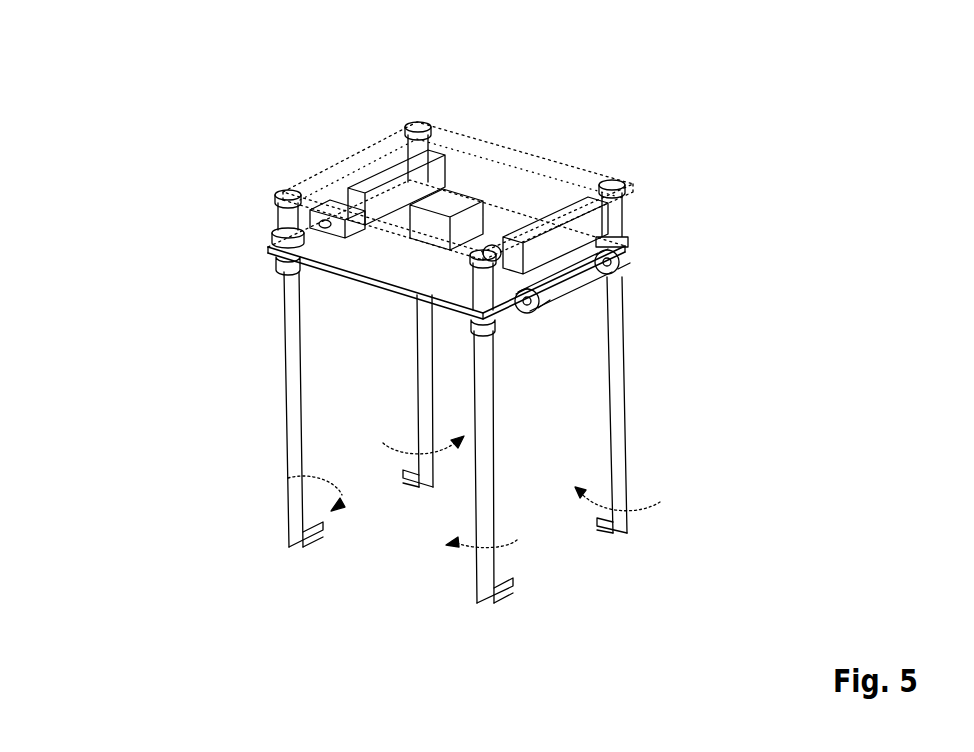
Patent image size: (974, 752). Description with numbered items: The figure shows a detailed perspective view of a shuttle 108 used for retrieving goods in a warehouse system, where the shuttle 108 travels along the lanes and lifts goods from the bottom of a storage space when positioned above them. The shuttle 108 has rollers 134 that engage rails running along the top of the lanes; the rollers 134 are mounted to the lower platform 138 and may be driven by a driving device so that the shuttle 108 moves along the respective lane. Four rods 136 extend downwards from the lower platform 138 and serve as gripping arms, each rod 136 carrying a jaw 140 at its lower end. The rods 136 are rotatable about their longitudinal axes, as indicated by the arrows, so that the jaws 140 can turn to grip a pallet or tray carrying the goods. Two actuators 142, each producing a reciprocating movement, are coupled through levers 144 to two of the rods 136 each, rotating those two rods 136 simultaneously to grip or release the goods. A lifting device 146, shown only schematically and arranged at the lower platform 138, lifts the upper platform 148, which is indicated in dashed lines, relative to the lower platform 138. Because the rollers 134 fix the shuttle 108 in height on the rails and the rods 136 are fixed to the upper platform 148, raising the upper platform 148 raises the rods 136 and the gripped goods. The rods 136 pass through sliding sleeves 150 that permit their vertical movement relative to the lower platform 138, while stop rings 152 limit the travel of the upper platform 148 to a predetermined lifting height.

The shuttle 108 is at (238, 108).
The rollers 134 is at (537, 303).
The rods 136 is at (615, 372).
The lower platform 138 is at (352, 257).
The jaw 140 is at (610, 537).
The actuators 142 is at (397, 200).
The levers 144 is at (288, 232).
The lifting device 146 is at (483, 215).
The upper platform 148 is at (575, 168).
The sliding sleeves 150 is at (280, 262).
The stop rings 152 is at (268, 202).